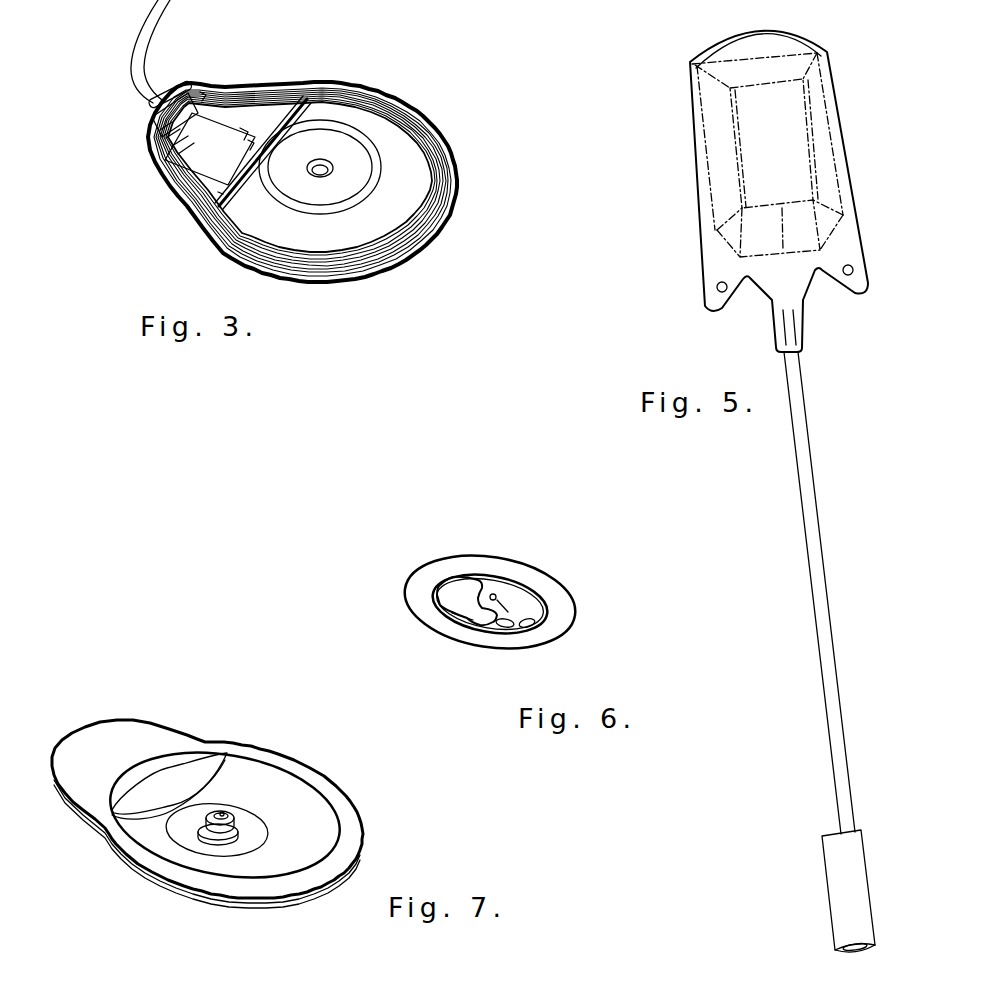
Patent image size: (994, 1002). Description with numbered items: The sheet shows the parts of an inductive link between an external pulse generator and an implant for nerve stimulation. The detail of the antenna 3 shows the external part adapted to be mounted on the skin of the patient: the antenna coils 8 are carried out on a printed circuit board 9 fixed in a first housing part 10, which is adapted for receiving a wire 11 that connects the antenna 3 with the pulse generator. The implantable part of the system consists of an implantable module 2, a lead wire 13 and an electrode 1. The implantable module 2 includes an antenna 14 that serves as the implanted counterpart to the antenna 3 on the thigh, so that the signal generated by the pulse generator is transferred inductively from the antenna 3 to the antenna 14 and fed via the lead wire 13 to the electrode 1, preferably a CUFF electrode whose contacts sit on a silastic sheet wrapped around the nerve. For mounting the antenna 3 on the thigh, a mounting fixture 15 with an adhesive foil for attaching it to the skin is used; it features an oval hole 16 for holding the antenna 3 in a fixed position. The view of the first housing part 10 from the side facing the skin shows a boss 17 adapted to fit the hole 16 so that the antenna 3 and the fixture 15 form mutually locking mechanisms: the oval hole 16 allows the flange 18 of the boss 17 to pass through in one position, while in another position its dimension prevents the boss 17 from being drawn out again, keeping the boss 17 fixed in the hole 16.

In FIG. 5, the electrode 1 is at (845, 866).
In FIG. 5, the implantable module 2 is at (688, 73).
In FIG. 3, the antenna 3 is at (466, 119).
In FIG. 7, the antenna 3 is at (258, 714).
In FIG. 3, the antenna coils 8 is at (430, 238).
In FIG. 3, the printed circuit board 9 is at (217, 152).
In FIG. 3, the first housing part 10 is at (223, 80).
In FIG. 3, the wire 11 is at (163, 15).
In FIG. 5, the lead wire 13 is at (808, 512).
In FIG. 5, the antenna 14 is at (718, 140).
In FIG. 6, the mounting fixture 15 is at (386, 568).
In FIG. 6, the oval hole 16 is at (466, 597).
In FIG. 7, the boss 17 is at (237, 830).
In FIG. 7, the flange 18 is at (243, 812).